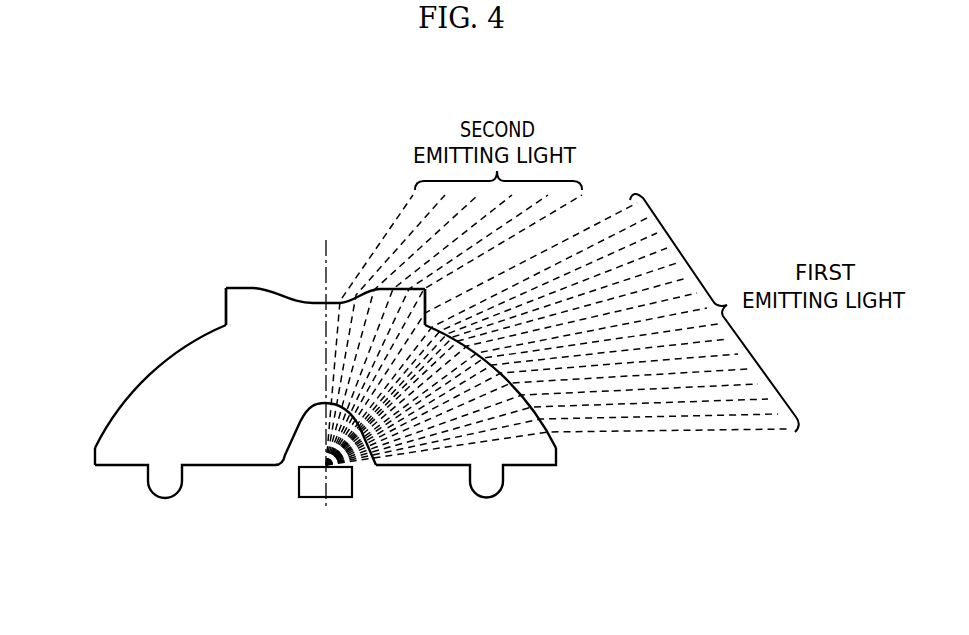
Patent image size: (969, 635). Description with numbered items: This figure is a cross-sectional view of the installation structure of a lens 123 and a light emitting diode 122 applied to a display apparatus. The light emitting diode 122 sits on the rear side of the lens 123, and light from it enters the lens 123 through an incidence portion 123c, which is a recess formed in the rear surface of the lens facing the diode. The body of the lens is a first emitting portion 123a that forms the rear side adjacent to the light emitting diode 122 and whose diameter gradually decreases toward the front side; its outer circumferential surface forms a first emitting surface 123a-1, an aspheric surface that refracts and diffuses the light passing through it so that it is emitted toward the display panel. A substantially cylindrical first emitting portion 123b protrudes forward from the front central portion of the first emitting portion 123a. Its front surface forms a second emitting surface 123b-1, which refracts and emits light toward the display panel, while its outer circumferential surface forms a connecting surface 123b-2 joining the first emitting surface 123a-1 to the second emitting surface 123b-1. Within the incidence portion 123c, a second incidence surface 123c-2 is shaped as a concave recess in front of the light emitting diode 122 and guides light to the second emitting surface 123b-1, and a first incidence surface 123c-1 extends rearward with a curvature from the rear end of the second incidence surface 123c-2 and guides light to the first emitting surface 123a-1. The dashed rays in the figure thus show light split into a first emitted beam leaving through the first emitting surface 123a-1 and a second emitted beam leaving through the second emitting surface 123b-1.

The light emitting diode 122 is at (362, 492).
The lens 123 is at (286, 374).
The first emitting portion 123a is at (286, 393).
The first emitting surface 123a-1 is at (161, 360).
The first emitting portion (protruding portion) 123b is at (266, 280).
The second emitting surface 123b-1 is at (282, 290).
The connecting surface 123b-2 is at (226, 309).
The incidence portion 123c is at (298, 497).
The first incidence surface 123c-1 is at (283, 458).
The second incidence surface 123c-2 is at (313, 409).